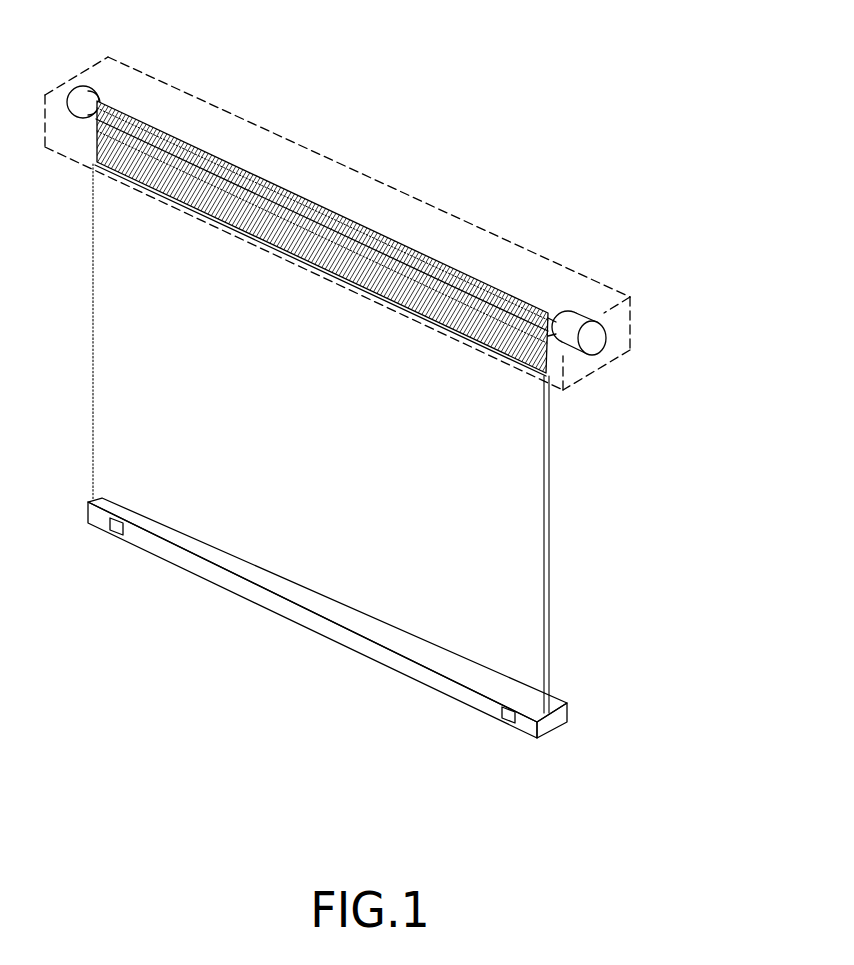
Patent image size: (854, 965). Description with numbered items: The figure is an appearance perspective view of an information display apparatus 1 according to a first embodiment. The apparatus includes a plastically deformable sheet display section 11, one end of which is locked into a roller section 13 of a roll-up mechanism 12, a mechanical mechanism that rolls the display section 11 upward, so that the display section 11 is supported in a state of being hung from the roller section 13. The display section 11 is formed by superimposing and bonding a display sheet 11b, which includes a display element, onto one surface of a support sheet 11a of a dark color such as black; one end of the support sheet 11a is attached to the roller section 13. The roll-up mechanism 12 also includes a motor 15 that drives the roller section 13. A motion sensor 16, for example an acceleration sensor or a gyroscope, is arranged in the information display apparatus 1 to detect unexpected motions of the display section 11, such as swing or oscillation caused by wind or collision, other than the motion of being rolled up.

The information display apparatus 1 is at (377, 407).
The display section 11 is at (424, 438).
The support sheet 11a is at (548, 376).
The display sheet 11b is at (515, 460).
The roll-up mechanism 12 is at (633, 293).
The roller section 13 is at (497, 271).
The motor 15 is at (570, 312).
The motion sensor 16 is at (115, 533).